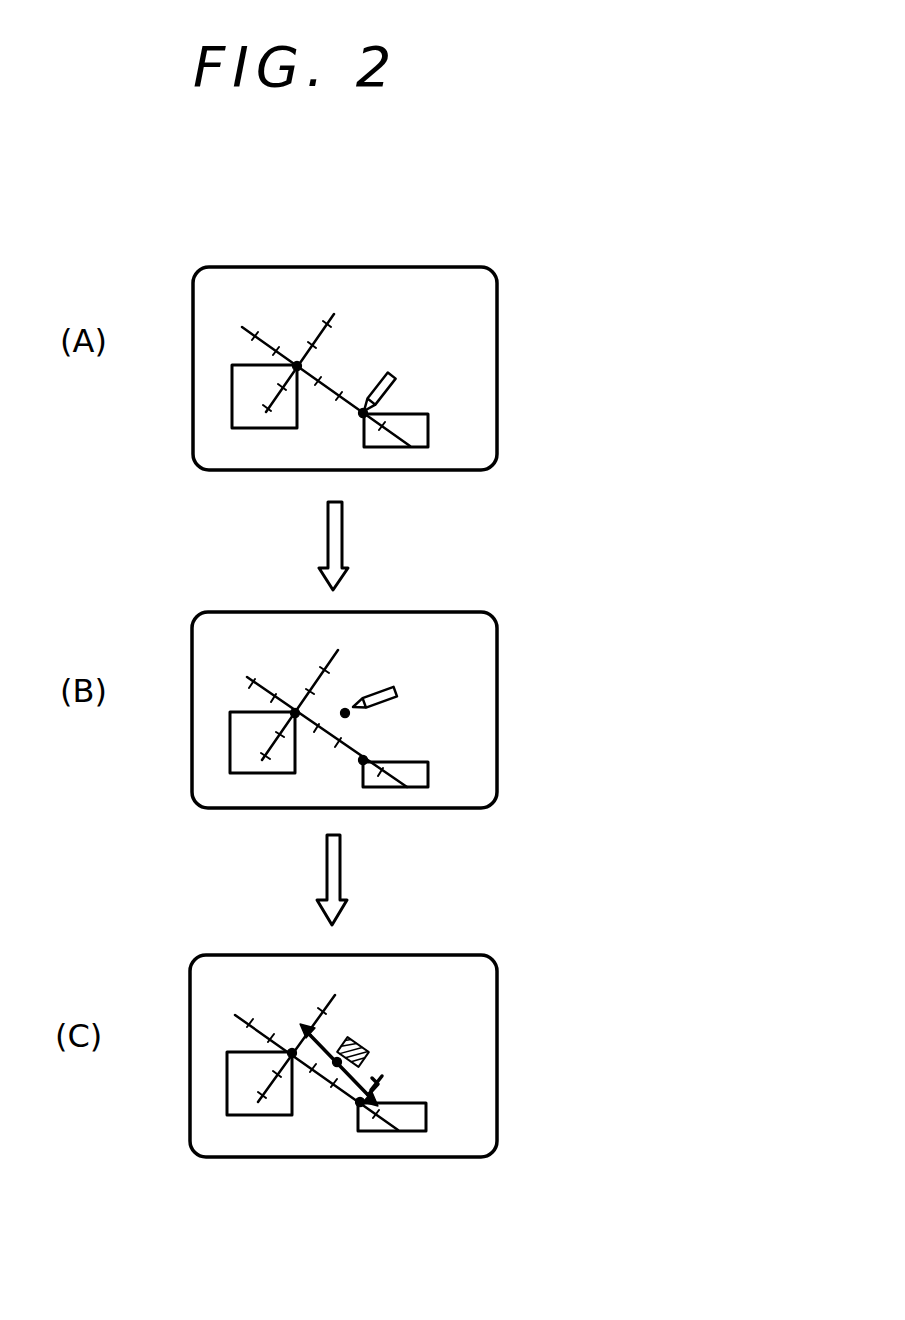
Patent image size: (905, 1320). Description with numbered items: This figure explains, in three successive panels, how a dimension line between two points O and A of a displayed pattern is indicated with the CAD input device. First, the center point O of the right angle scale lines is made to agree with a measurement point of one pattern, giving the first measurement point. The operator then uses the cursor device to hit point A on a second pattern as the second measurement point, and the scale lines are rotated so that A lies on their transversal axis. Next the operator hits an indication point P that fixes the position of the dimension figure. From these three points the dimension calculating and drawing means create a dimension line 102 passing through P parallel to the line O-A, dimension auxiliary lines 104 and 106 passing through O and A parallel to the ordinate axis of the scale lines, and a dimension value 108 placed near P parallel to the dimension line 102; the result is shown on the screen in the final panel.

The dimension line 102 is at (381, 1079).
The dimension auxiliary line 104 is at (310, 1035).
The dimension auxiliary line 106 is at (373, 1084).
The dimension value 108 is at (360, 1046).